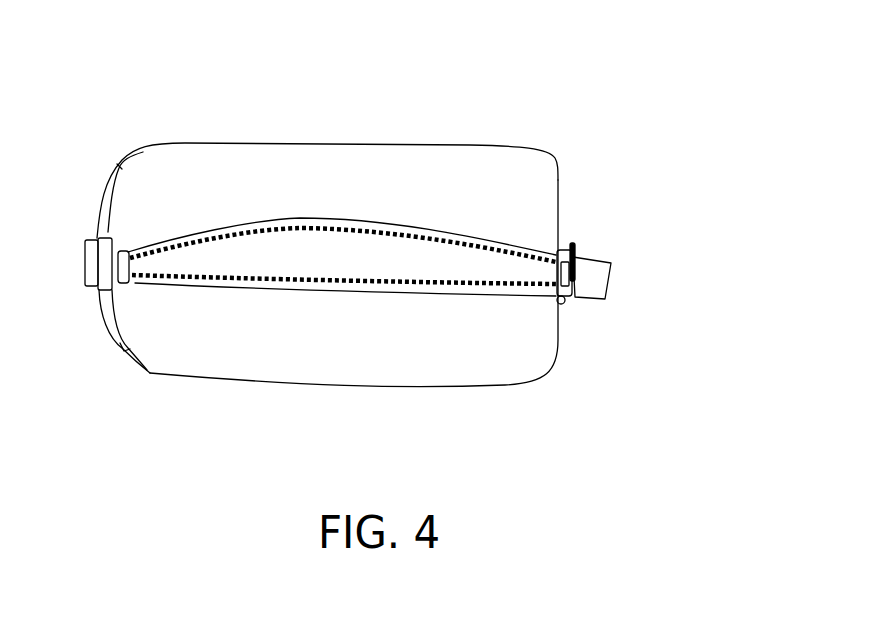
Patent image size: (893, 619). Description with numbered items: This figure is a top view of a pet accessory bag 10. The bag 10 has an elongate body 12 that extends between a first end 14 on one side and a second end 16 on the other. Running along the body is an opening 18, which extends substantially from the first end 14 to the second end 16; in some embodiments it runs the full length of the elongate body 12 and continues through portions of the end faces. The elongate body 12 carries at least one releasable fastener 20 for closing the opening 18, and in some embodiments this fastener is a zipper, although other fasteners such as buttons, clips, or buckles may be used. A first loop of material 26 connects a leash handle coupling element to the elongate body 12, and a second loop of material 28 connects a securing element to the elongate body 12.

The pet accessory bag 10 is at (520, 40).
The elongate body 12 is at (240, 157).
The first end 14 is at (128, 318).
The second end 16 is at (553, 345).
The opening 18 is at (505, 247).
The releasable fastener 20 is at (578, 246).
The first loop of material 26 is at (96, 261).
The second loop of material 28 is at (613, 288).